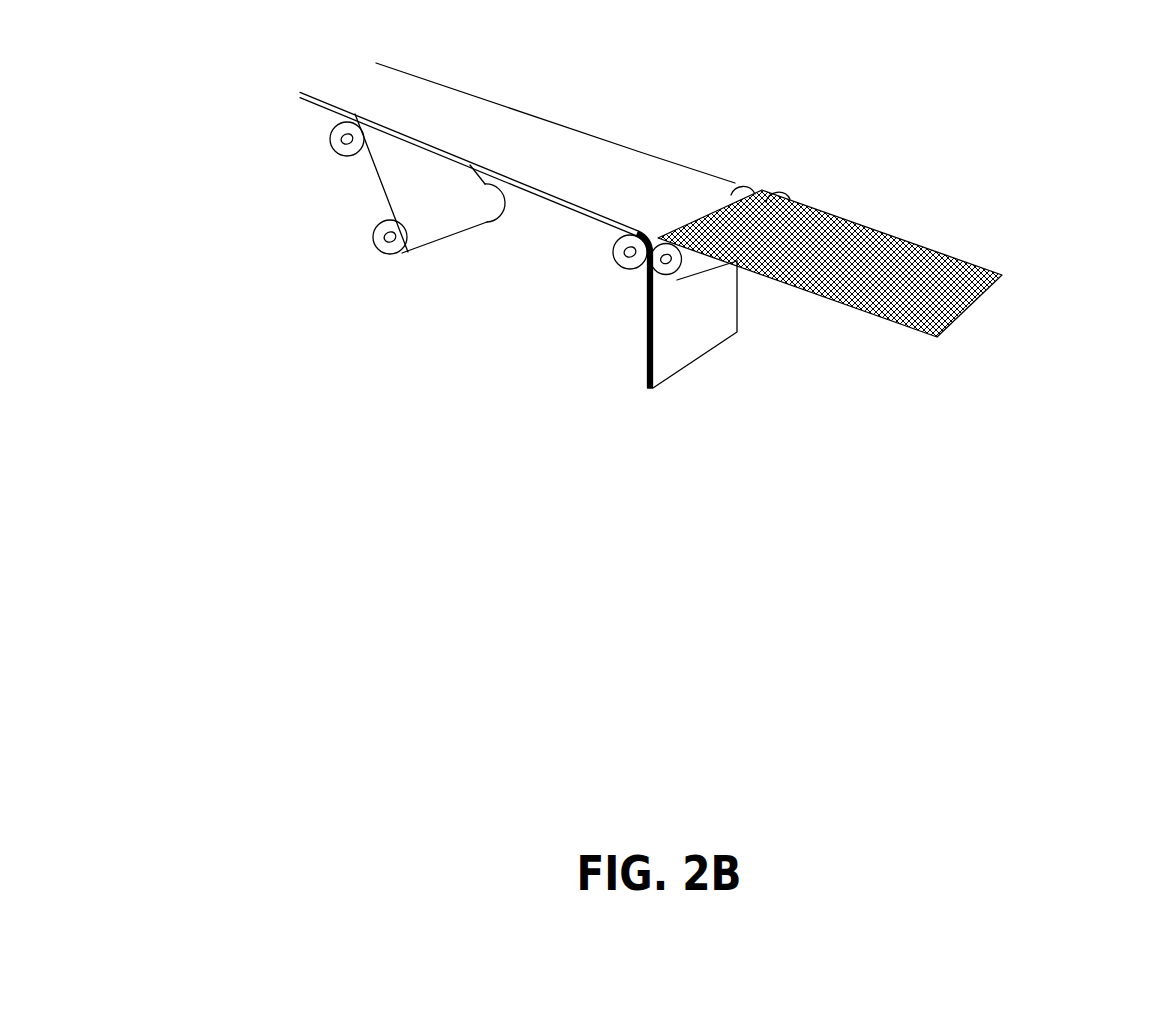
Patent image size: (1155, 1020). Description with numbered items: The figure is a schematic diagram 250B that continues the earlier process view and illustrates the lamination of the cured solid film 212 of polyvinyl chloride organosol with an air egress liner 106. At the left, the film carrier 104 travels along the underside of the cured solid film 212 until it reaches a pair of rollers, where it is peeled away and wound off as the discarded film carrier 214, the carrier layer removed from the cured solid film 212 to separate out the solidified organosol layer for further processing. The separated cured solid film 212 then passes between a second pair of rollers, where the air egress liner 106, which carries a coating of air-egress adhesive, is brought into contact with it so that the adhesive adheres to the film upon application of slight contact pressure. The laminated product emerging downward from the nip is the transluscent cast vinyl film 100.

The cured solid film 212 is at (650, 323).
The film carrier 104 is at (328, 113).
The discarded film carrier 214 is at (403, 184).
The air egress liner 106 is at (904, 250).
The transluscent cast vinyl film 100 is at (663, 382).
The schematic diagram 250B is at (937, 582).